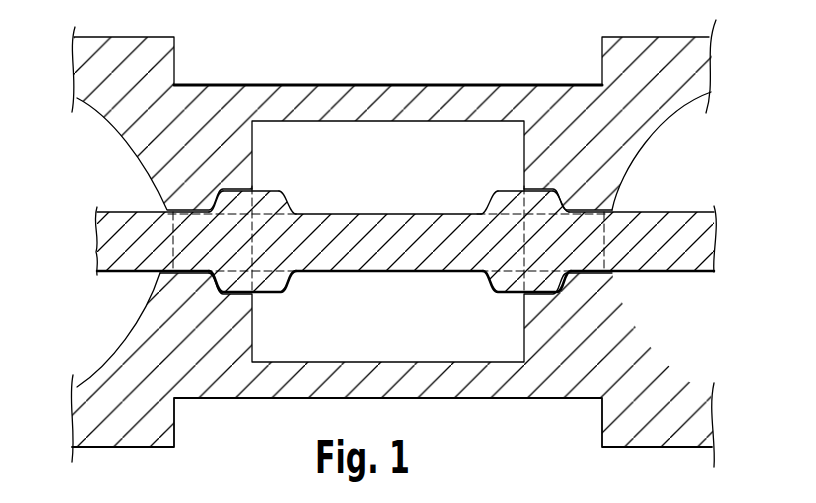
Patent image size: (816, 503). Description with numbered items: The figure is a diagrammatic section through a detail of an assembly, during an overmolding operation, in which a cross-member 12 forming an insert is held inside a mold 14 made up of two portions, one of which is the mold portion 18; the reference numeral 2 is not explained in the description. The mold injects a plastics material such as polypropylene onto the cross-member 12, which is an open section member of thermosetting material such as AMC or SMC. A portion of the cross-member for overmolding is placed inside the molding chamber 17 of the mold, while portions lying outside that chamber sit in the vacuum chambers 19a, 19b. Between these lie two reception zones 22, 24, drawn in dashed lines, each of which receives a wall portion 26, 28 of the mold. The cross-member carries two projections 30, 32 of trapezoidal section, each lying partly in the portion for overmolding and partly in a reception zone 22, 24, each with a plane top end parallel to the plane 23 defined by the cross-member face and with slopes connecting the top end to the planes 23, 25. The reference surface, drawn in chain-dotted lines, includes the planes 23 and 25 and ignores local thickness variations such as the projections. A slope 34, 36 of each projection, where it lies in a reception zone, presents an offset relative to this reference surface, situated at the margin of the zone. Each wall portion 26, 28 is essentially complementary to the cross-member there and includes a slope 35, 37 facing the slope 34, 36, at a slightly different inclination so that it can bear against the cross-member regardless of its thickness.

The sealing plate 2 is at (388, 262).
The cross-member 12 is at (113, 281).
The mold 14 is at (190, 80).
The molding chamber 17 is at (489, 132).
The mold portion 18 is at (596, 404).
The vacuum chamber 19a is at (111, 339).
The vacuum chamber 19b is at (695, 120).
The reception zone 22 is at (172, 223).
The plane 23 is at (288, 214).
The reception zone 24 is at (611, 252).
The plane 25 is at (333, 272).
The wall portion 26 is at (200, 237).
The wall portion 28 is at (594, 216).
The projection 30 is at (280, 189).
The projection 32 is at (505, 188).
The slope 34 is at (213, 206).
The slope 35 is at (216, 293).
The slope 36 is at (585, 173).
The slope 37 is at (541, 290).